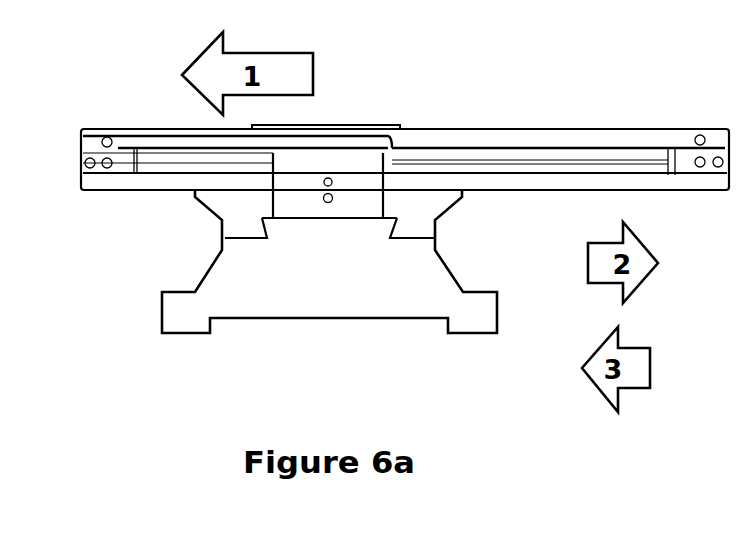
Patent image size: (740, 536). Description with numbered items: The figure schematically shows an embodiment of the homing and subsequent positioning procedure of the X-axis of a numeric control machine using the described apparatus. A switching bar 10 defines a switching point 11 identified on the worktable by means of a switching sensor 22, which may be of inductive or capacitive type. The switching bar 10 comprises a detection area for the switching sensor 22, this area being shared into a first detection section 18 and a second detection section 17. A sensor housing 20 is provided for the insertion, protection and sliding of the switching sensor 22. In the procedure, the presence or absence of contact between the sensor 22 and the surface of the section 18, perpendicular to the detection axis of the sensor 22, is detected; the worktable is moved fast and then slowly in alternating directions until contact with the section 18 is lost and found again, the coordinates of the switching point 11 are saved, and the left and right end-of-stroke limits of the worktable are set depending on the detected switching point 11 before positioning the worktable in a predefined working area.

The switching bar 10 is at (690, 152).
The switching point 11 is at (390, 140).
The second detection section 17 is at (467, 140).
The first detection section 18 is at (168, 152).
The sensor housing 20 is at (362, 193).
The switching sensor 22 is at (298, 153).